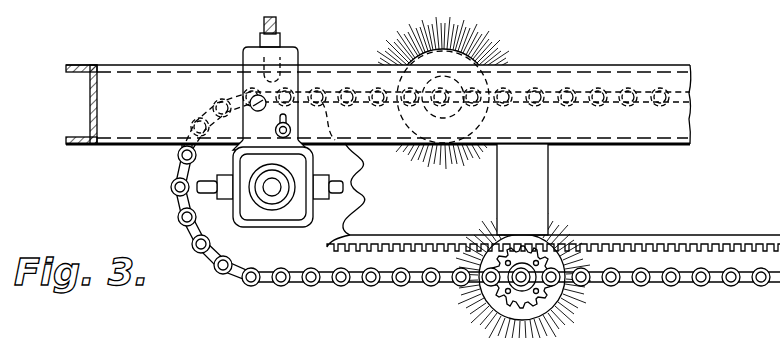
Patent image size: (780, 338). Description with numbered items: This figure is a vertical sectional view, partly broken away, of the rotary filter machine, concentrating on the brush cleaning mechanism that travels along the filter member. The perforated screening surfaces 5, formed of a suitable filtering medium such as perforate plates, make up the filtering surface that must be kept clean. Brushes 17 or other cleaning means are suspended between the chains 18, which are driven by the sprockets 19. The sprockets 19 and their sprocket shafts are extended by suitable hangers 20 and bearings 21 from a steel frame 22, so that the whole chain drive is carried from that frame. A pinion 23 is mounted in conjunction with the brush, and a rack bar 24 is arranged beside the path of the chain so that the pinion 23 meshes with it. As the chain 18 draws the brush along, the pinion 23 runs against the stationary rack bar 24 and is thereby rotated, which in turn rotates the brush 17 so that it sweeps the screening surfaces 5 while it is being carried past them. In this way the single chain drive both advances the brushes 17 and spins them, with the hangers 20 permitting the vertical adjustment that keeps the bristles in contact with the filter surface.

The perforated screening surfaces 5 is at (477, 241).
The brushes 17 is at (502, 52).
The chains 18 is at (403, 287).
The sprockets 19 is at (377, 175).
The hangers 20 is at (334, 143).
The bearings 21 is at (273, 212).
The steel frame 22 is at (90, 118).
The pinion 23 is at (548, 260).
The rack bar 24 is at (418, 241).